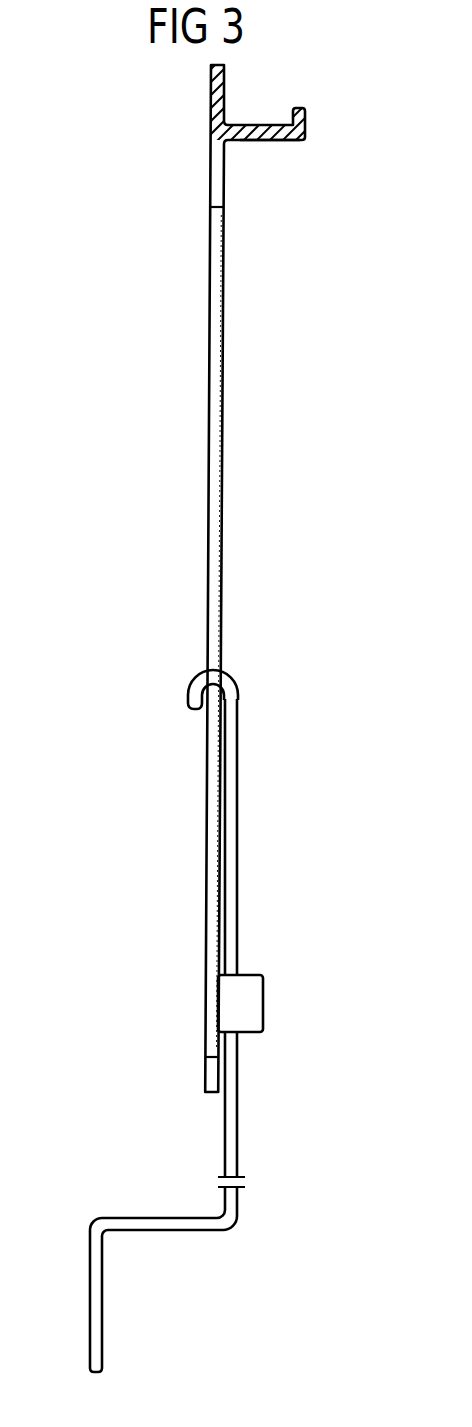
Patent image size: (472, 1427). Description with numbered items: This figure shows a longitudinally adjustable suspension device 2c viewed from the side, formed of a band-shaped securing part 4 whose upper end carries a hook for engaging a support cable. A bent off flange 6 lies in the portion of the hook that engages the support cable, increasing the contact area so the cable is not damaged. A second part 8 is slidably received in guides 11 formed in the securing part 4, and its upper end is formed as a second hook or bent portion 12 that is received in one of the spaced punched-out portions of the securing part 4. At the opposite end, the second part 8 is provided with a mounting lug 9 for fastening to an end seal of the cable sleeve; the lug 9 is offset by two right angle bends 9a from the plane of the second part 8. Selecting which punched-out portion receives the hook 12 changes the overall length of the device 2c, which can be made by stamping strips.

The longitudinally adjustable suspension device 2c is at (203, 311).
The band-shaped securing part 4 is at (218, 484).
The bent off flange 6 is at (258, 134).
The second part 8 is at (232, 853).
The mounting lug 9 is at (98, 1272).
The right angle bends 9a is at (97, 1217).
The guides 11 is at (250, 1000).
The second hook or bent portion 12 is at (185, 701).